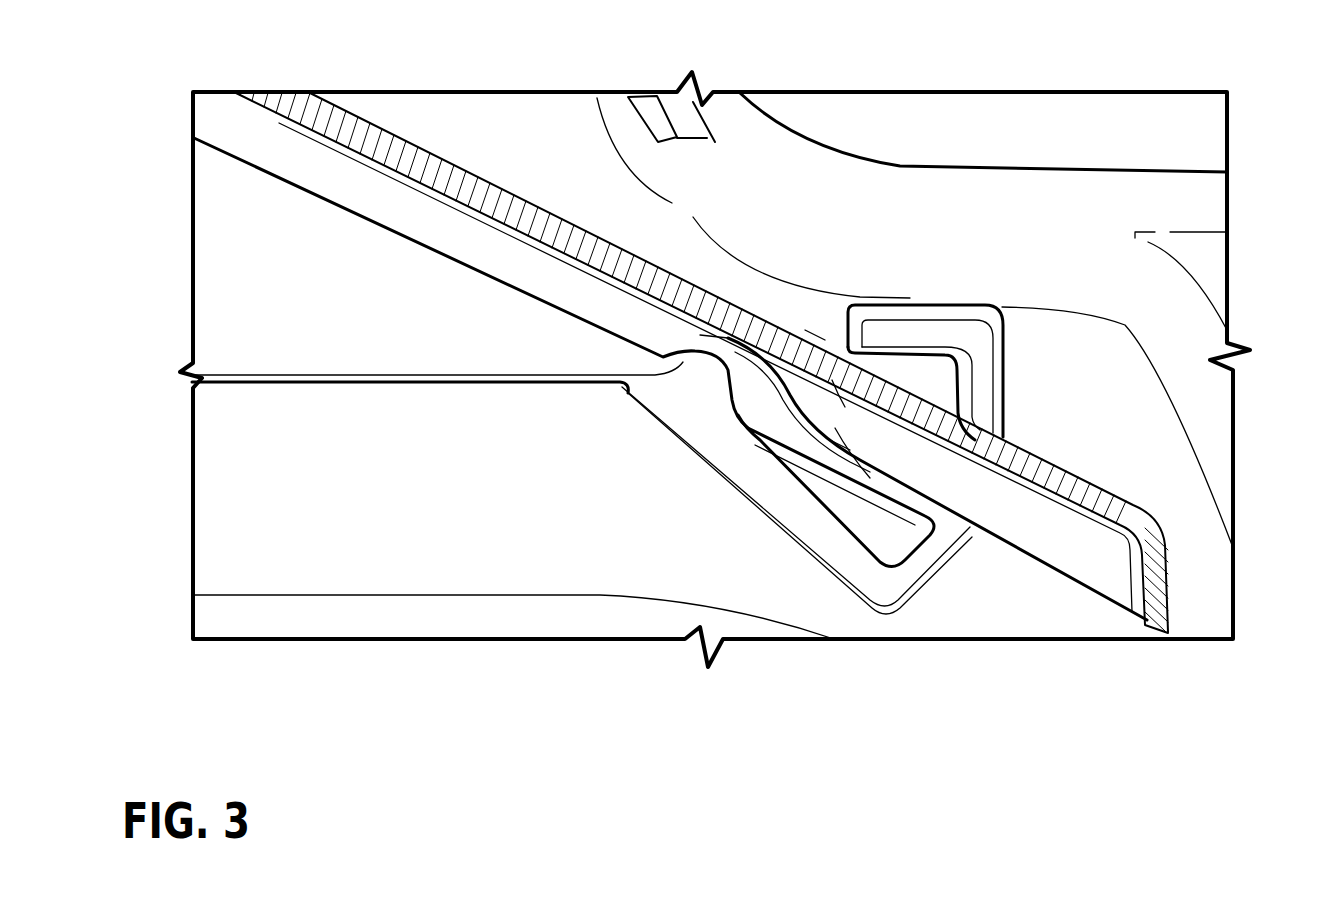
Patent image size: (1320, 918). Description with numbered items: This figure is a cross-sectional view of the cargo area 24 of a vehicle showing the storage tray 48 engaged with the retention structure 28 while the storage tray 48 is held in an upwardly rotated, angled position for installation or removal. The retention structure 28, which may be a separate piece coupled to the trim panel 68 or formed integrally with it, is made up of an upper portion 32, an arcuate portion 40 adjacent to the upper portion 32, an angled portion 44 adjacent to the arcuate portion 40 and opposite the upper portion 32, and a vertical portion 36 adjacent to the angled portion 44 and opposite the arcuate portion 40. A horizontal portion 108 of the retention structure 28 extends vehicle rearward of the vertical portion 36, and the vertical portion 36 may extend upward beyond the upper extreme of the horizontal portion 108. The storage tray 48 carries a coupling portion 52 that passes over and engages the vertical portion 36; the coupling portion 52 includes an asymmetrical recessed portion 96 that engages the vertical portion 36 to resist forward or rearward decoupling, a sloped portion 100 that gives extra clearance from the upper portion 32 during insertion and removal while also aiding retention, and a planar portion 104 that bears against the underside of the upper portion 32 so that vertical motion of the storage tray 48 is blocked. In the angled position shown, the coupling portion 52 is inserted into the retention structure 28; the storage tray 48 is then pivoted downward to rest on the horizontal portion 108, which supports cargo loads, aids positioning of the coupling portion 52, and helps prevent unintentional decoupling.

The cargo area 24 is at (150, 152).
The retention structure 28 is at (917, 592).
The upper portion 32 is at (927, 330).
The vertical portion 36 is at (703, 385).
The arcuate portion 40 is at (993, 397).
The angled portion 44 is at (825, 530).
The storage tray 48 is at (251, 133).
The coupling portion 52 is at (766, 398).
The trim panel 68 is at (530, 138).
The recessed portion 96 is at (750, 352).
The sloped portion 100 is at (815, 338).
The planar portion 104 is at (840, 443).
The horizontal portion 108 is at (270, 380).